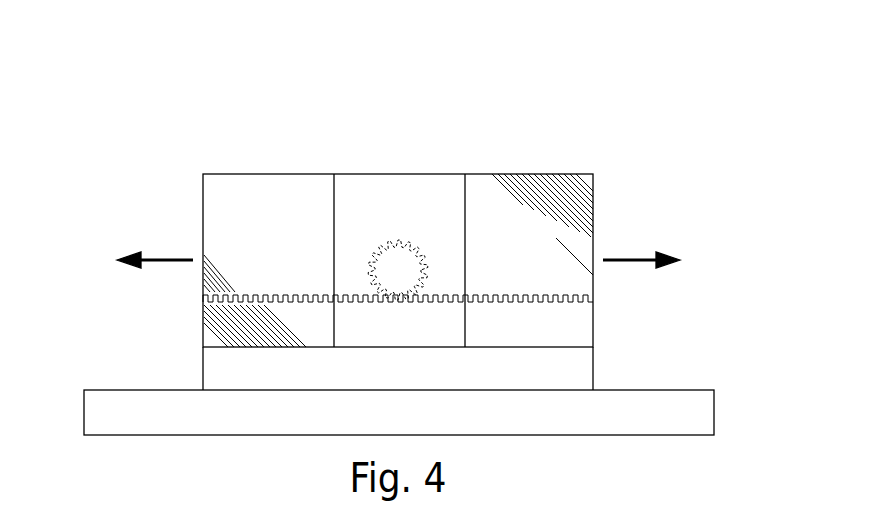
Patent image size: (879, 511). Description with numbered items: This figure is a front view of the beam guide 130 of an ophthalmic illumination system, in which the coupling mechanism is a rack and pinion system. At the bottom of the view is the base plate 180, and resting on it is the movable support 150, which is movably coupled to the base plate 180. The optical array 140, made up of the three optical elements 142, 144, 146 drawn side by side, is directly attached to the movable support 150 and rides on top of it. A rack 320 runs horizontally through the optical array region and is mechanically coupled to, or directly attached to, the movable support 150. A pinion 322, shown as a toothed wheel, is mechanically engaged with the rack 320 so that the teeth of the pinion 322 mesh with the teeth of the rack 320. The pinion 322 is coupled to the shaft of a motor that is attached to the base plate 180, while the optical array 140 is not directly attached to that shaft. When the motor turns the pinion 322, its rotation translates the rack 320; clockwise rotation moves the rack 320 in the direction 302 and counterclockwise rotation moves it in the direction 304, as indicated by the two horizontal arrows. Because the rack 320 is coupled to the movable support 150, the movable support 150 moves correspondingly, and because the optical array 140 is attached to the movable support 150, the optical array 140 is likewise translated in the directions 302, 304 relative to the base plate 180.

The beam guide 130 is at (680, 123).
The optical array 140 is at (148, 177).
The optical element 142 is at (268, 183).
The optical element 144 is at (398, 183).
The optical element 146 is at (530, 183).
The movable support 150 is at (587, 368).
The base plate 180 is at (142, 400).
The direction 302 is at (165, 257).
The direction 304 is at (631, 257).
The rack 320 is at (298, 295).
The pinion 322 is at (436, 247).